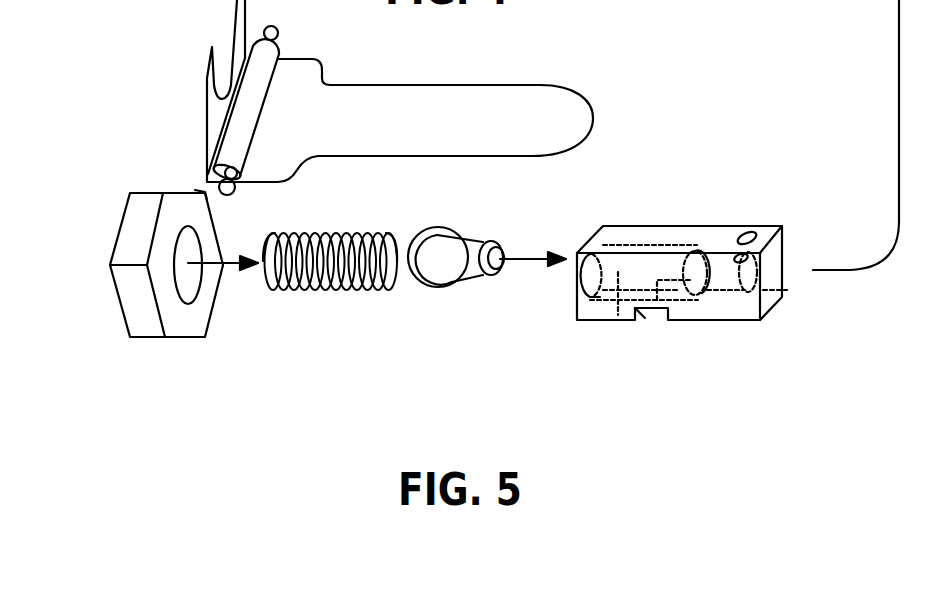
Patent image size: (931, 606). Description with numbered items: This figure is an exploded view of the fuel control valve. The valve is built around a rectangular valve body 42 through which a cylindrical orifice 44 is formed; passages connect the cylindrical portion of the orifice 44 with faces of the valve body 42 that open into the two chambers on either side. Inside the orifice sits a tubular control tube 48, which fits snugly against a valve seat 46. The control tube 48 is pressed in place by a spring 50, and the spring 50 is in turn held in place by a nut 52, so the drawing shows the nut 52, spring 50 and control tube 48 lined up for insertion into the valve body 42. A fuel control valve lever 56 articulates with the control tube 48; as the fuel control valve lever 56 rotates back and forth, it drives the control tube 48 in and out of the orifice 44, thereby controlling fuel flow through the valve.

The valve body 42 is at (742, 320).
The orifice 44 is at (616, 315).
The valve seat 46 is at (695, 297).
The control tube 48 is at (457, 277).
The spring 50 is at (319, 290).
The nut 52 is at (125, 208).
The fuel control valve lever 56 is at (428, 120).